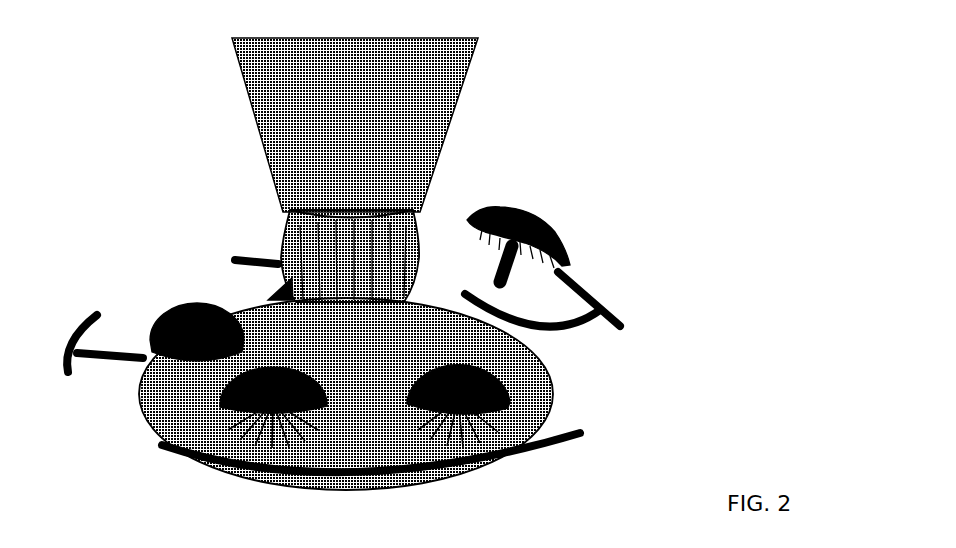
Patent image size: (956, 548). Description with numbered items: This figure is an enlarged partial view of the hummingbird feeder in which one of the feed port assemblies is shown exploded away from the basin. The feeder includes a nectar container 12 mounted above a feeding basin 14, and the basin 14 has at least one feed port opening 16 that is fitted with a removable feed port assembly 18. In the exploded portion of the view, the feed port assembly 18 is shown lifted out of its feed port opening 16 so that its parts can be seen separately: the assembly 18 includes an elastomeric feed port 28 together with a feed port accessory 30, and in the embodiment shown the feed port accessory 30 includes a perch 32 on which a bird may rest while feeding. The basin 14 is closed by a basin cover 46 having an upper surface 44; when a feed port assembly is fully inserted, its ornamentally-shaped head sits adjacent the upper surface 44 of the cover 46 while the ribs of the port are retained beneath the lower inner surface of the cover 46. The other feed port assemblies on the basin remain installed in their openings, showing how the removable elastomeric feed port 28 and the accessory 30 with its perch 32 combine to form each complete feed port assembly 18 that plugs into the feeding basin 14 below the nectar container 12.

The nectar container 12 is at (453, 92).
The feeding basin 14 is at (552, 398).
The feed port opening 16 is at (463, 307).
The feed port assembly 18 is at (655, 200).
The elastomeric feed port 28 is at (515, 200).
The feed port accessory 30 is at (642, 325).
The perch 32 is at (580, 287).
The upper surface 44 is at (248, 300).
The basin cover 46 is at (142, 392).